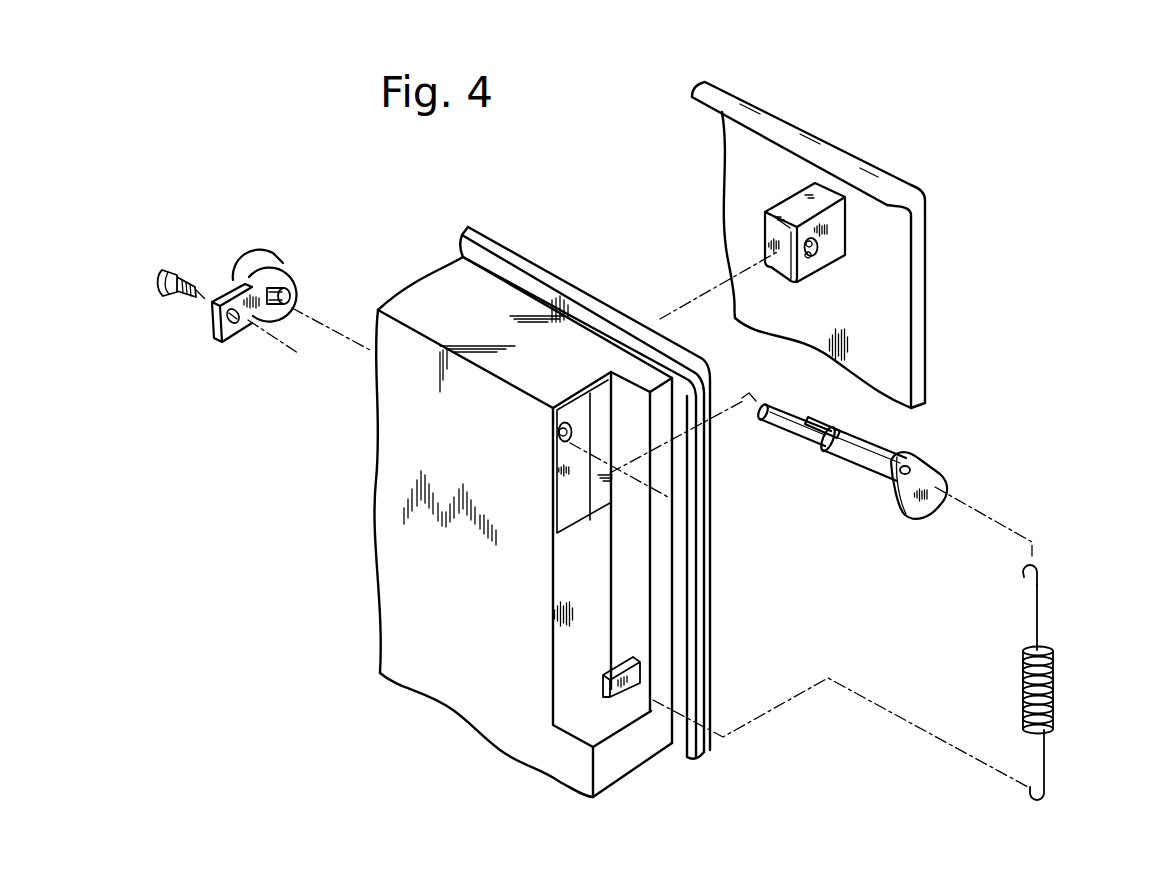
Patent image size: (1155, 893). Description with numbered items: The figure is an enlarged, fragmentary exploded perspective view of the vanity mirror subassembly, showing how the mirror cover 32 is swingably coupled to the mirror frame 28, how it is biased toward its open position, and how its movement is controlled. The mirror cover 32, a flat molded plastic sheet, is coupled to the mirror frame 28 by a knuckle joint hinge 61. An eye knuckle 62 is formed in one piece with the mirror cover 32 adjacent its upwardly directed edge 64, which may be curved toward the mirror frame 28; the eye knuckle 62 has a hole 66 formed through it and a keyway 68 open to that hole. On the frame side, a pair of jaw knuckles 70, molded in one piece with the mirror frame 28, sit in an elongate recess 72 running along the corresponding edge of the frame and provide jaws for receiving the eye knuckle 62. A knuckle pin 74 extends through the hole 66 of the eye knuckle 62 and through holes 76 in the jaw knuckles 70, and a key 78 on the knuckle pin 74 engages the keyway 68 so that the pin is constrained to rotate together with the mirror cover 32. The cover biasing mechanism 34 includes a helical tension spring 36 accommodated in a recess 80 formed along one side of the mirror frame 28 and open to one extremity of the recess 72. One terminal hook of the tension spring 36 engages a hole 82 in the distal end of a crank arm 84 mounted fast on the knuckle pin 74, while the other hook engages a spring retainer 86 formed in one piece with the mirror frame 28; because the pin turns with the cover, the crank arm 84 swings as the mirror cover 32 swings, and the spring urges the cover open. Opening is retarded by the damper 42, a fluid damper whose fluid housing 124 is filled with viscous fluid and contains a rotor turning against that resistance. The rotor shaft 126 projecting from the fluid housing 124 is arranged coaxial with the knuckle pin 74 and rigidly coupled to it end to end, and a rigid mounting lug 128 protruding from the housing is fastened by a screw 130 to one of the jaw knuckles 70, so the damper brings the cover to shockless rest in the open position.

The mirror frame 28 is at (522, 253).
The damper 42 is at (243, 246).
The fluid housing 124 is at (293, 273).
The rotor shaft 126 is at (291, 308).
The mounting lug 128 is at (230, 334).
The screw 130 is at (164, 296).
The mirror cover 32 is at (727, 158).
The edge of the mirror cover 64 is at (817, 140).
The eye knuckle 62 is at (833, 252).
The hole 66 is at (808, 256).
The keyway 68 is at (800, 237).
The jaw knuckles 70 is at (563, 478).
The recess 72 is at (612, 497).
The holes 76 is at (572, 425).
The recess 80 is at (637, 556).
The spring retainer 86 is at (617, 697).
The knuckle joint hinge 61 is at (778, 441).
The knuckle pin 74 is at (852, 458).
The key 78 is at (818, 423).
The hole 82 is at (907, 467).
The crank arm 84 is at (937, 480).
The cover biasing mechanism 34 is at (1003, 640).
The helical tension spring 36 is at (1057, 672).